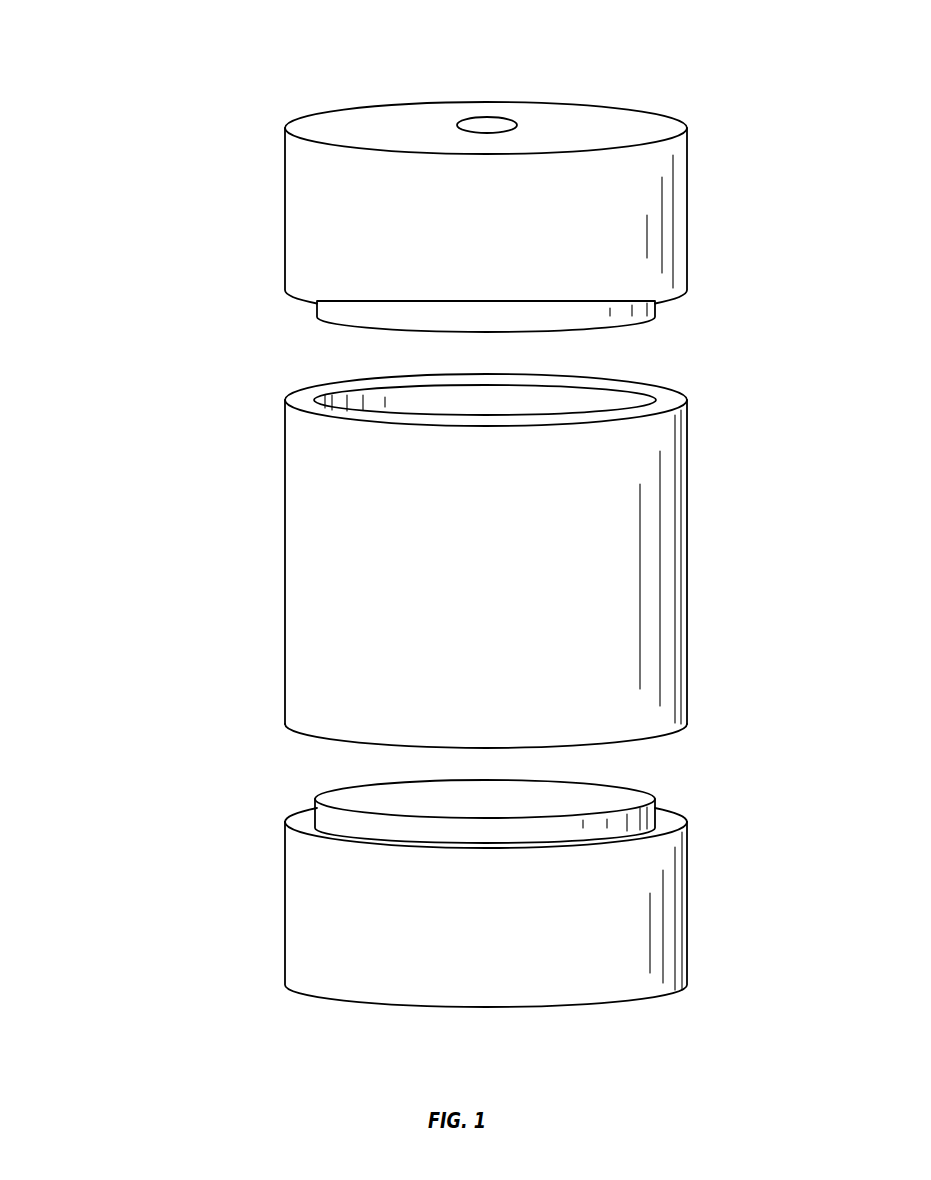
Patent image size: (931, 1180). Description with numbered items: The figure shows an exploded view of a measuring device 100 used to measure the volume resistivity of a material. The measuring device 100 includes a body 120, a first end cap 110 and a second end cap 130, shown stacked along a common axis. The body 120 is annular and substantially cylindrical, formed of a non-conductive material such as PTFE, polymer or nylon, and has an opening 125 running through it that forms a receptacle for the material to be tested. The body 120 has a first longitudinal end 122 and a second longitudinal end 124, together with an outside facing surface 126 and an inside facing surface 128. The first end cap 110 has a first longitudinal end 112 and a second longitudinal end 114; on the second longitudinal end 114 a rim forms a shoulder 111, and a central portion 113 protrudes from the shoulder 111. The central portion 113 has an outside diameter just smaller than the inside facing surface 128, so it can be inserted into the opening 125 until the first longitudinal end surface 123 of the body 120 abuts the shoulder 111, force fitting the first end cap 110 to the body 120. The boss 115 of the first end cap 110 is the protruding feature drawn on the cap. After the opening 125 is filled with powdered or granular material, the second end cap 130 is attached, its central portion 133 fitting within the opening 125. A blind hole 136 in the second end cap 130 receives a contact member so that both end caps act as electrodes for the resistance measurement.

The measuring device 100 is at (150, 554).
The first end cap 110 is at (249, 911).
The shoulder 111 is at (665, 817).
The first longitudinal end 112 is at (701, 970).
The central portion 113 is at (623, 786).
The second longitudinal end 114 is at (701, 822).
The boss 115 is at (353, 800).
The body 120 is at (259, 623).
The first longitudinal end 122 is at (689, 703).
The first longitudinal end surface 123 is at (676, 730).
The second longitudinal end 124 is at (689, 410).
The opening 125 is at (583, 403).
The outside facing surface 126 is at (689, 551).
The inside facing surface 128 is at (392, 384).
The second end cap 130 is at (253, 232).
The central portion 133 is at (317, 308).
The blind hole 136 is at (477, 122).